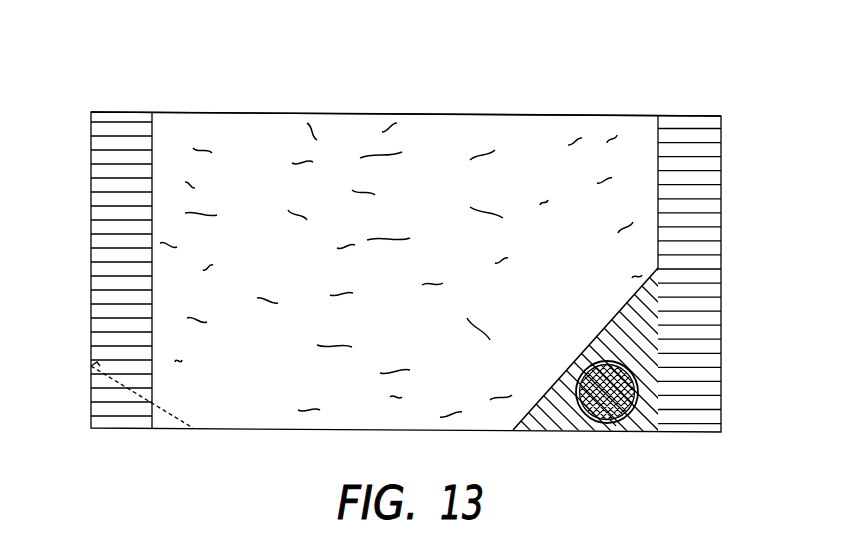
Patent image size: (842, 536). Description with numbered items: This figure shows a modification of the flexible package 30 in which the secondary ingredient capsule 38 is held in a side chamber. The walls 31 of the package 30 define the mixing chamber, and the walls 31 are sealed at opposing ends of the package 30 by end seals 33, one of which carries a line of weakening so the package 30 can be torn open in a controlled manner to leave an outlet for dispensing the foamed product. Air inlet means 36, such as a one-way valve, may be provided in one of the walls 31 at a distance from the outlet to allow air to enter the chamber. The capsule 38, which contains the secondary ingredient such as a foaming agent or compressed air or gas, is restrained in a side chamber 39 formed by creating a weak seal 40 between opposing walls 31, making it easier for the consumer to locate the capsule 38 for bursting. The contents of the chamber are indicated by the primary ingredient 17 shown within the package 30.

The package 30 is at (142, 78).
The walls 31 is at (518, 113).
The end seals 33 is at (91, 147).
The absorbent material particles 17 is at (410, 240).
The air inlet means 36 is at (585, 366).
The capsule 38 is at (613, 424).
The side chamber 39 is at (544, 395).
The weak seal 40 is at (618, 312).